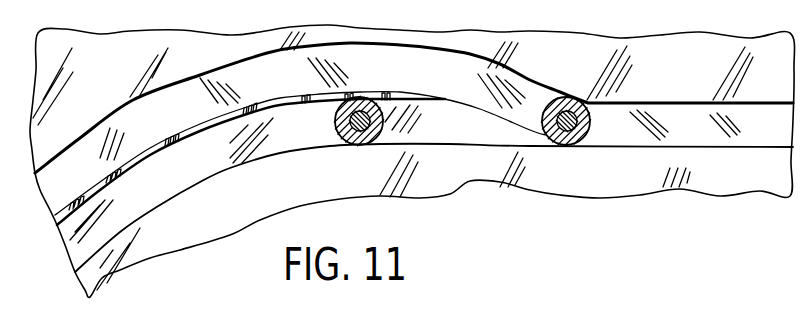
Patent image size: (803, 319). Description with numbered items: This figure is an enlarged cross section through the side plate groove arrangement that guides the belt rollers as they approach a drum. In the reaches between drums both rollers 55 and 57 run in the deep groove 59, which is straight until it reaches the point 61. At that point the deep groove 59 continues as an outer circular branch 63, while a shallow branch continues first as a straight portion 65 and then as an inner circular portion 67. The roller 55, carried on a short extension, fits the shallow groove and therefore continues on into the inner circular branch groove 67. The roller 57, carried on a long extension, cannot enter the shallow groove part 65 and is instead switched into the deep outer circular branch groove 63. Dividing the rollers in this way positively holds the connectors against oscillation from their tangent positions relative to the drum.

The roller 55 is at (353, 146).
The roller 57 is at (580, 146).
The groove 59 is at (693, 84).
The point 61 is at (593, 60).
The outer circular branch 63 is at (488, 52).
The straight portion 65 is at (446, 145).
The inner circular portion 67 is at (187, 163).